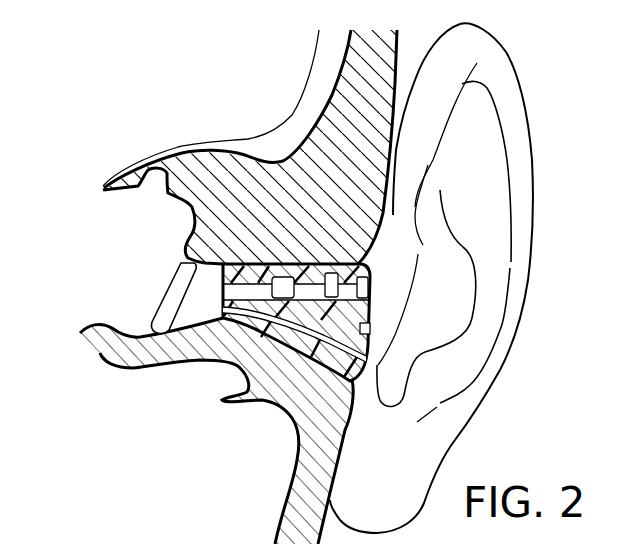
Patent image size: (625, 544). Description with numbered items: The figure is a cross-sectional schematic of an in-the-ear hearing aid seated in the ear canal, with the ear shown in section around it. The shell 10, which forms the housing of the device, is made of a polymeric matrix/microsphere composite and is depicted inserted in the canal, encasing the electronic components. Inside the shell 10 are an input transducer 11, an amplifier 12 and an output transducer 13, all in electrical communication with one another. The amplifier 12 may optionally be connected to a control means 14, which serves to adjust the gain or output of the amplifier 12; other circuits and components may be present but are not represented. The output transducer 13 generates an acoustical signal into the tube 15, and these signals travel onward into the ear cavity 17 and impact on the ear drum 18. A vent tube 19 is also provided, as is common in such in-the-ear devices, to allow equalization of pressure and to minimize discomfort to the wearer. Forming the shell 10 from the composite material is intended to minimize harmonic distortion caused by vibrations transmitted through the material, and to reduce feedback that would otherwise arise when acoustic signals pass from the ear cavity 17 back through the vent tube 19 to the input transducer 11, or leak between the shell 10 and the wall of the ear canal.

The shell 10 is at (295, 433).
The input transducer 11 is at (370, 285).
The amplifier 12 is at (326, 263).
The output transducer 13 is at (281, 263).
The control means 14 is at (370, 328).
The tube 15 is at (240, 263).
The ear cavity 17 is at (198, 292).
The ear drum 18 is at (157, 312).
The vent tube 19 is at (240, 304).